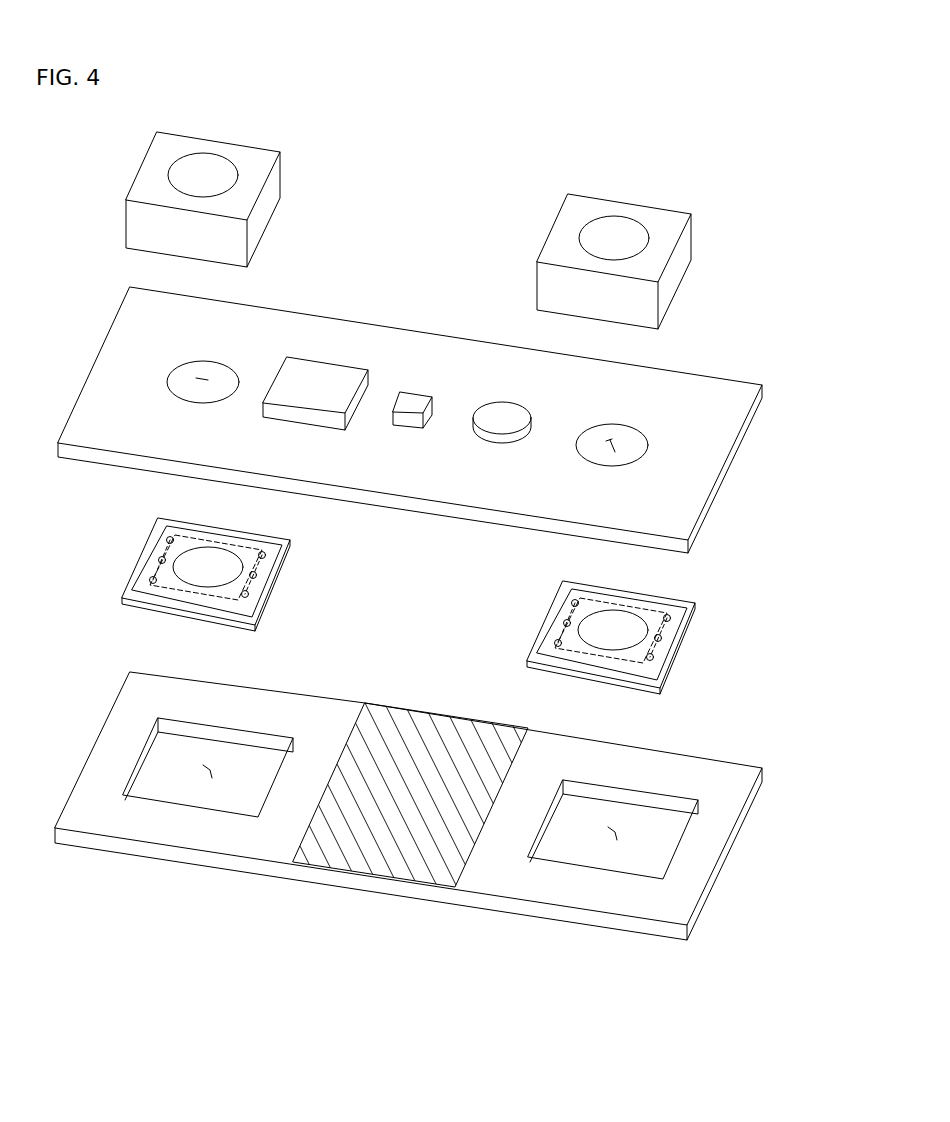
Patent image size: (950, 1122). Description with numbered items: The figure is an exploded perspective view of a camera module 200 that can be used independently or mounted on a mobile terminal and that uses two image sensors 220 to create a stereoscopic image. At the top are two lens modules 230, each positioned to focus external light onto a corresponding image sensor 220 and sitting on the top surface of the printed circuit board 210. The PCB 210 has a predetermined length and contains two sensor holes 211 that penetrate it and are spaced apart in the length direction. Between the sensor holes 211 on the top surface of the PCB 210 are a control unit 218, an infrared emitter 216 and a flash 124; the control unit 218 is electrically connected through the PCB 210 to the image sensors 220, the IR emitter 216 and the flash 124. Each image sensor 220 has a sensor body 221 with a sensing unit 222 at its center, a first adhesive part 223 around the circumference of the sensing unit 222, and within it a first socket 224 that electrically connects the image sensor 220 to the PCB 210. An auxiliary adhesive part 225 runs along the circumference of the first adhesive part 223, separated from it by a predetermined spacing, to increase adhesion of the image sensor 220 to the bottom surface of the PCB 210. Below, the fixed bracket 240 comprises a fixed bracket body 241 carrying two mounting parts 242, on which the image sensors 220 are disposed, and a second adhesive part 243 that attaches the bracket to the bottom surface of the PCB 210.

The camera module 200 is at (437, 196).
The lens module 230 is at (282, 172).
The printed circuit board 210 is at (727, 473).
The sensor hole 211 is at (204, 378).
The control unit 218 is at (330, 362).
The infrared emitter 216 is at (417, 393).
The flash 124 is at (505, 403).
The image sensor 220 is at (298, 533).
The sensor body 221 is at (293, 542).
The sensing unit 222 is at (168, 551).
The first adhesive part 223 is at (287, 565).
The first socket 224 is at (267, 588).
The auxiliary adhesive part 225 is at (188, 602).
The fixed bracket 240 is at (432, 828).
The fixed bracket body 241 is at (702, 910).
The mounting part 242 is at (208, 772).
The second adhesive part 243 is at (368, 855).